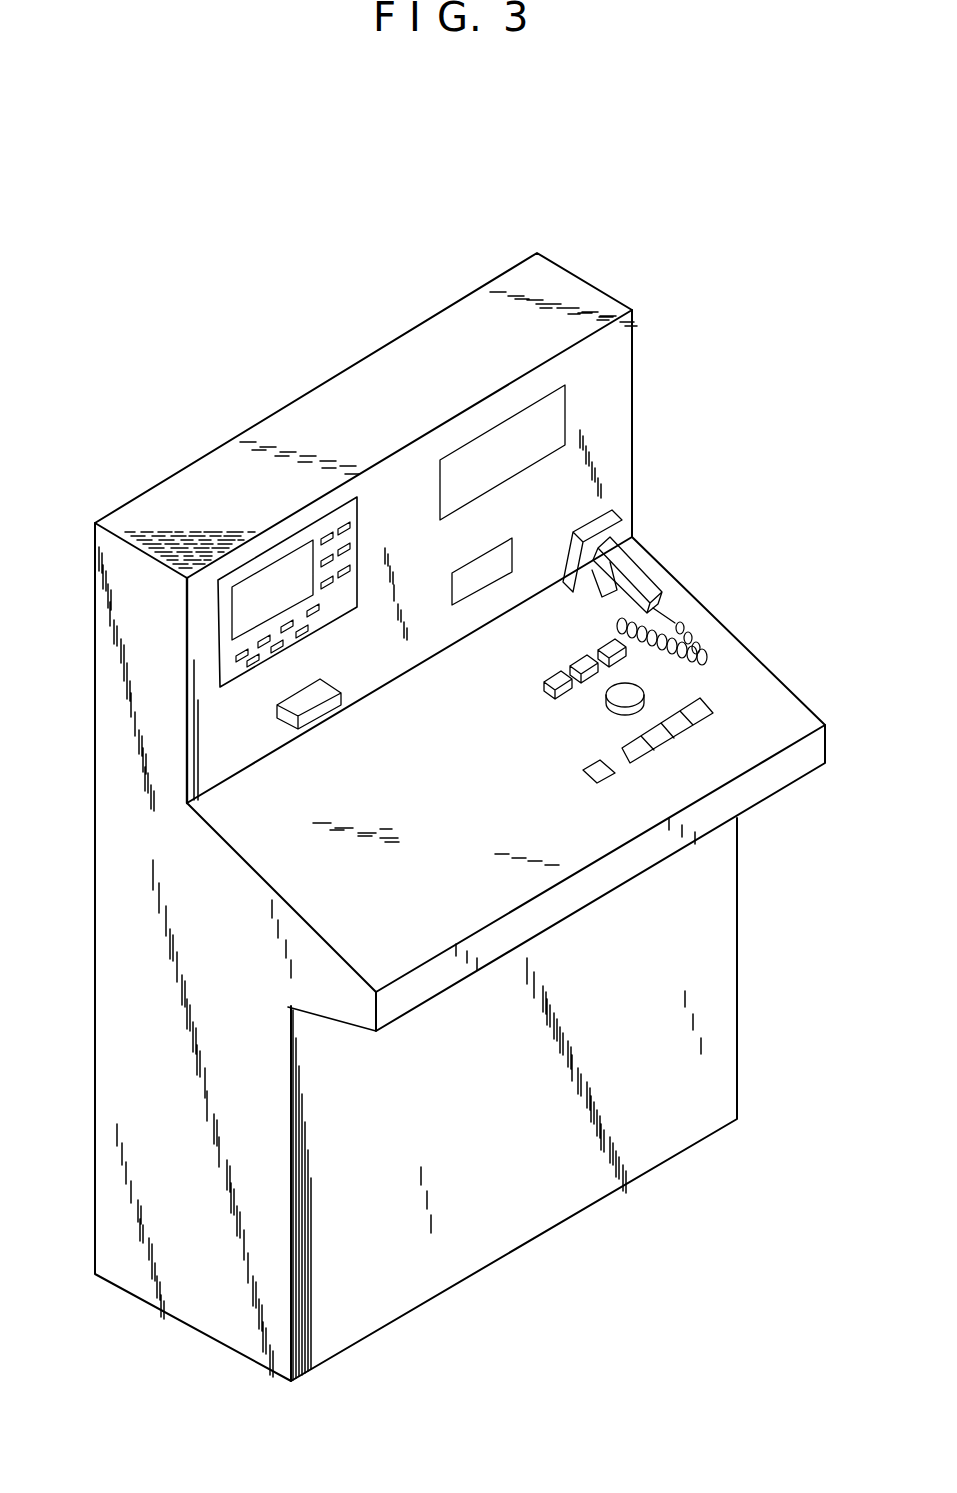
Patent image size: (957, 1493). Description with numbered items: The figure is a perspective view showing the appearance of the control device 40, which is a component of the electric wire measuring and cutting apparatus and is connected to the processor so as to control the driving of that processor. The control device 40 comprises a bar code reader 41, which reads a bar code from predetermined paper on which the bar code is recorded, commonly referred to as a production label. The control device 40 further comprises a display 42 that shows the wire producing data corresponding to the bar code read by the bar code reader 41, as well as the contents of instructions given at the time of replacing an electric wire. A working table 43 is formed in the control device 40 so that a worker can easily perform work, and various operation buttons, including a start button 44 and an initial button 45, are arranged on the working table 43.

The control device 40 is at (356, 303).
The bar code reader 41 is at (623, 562).
The display 42 is at (258, 595).
The working table 43 is at (421, 942).
The start button 44 is at (632, 695).
The initial button 45 is at (622, 624).